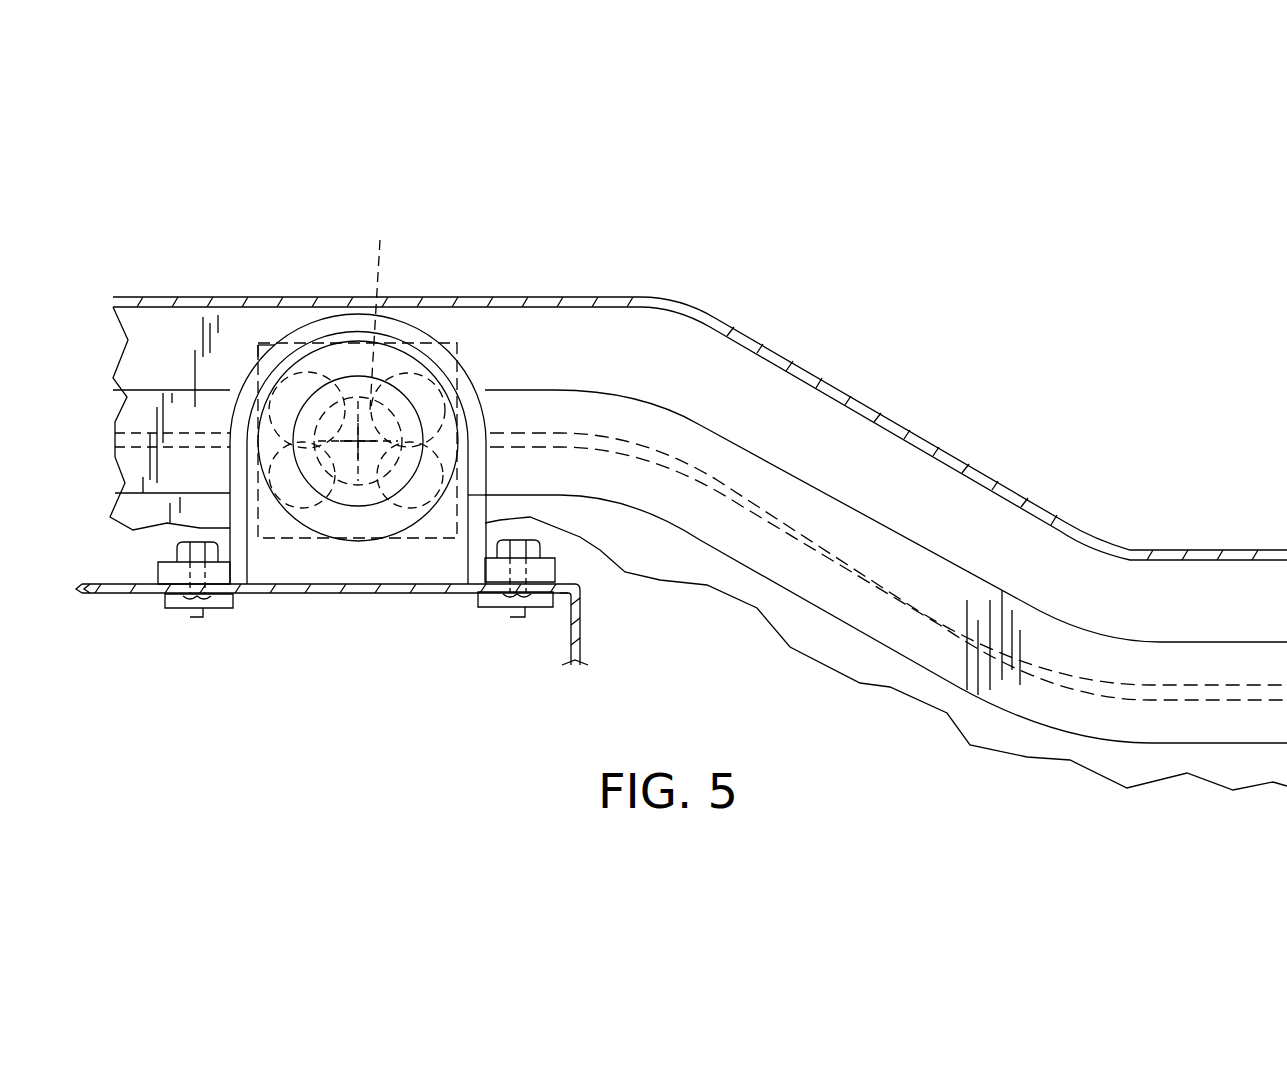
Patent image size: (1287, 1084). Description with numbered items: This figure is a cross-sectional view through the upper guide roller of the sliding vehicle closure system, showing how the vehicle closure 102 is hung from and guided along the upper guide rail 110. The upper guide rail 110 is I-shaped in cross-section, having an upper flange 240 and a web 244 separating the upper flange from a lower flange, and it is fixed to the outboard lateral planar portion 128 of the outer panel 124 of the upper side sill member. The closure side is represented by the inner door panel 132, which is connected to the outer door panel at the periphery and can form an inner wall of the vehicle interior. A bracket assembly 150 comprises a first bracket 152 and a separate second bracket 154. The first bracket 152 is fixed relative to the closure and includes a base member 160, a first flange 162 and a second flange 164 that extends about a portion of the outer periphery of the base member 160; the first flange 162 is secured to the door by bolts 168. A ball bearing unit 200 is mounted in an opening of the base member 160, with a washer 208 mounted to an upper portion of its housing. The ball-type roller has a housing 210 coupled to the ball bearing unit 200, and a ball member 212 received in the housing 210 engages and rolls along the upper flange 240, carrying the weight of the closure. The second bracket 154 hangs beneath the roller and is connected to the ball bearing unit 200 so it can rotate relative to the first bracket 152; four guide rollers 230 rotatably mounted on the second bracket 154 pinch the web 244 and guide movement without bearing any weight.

The vehicle closure 102 is at (263, 594).
The upper guide rail 110 is at (862, 514).
The outer panel 124 is at (935, 445).
The outboard lateral planar portion 128 is at (747, 582).
The inner door panel 132 is at (372, 596).
The bracket assembly 150 is at (425, 320).
The first bracket 152 is at (298, 327).
The second bracket 154 is at (258, 338).
The base member 160 is at (445, 540).
The first flange 162 is at (168, 568).
The second flange 164 is at (478, 405).
The bolts 168 is at (196, 620).
The ball bearing unit 200 is at (346, 536).
The washer 208 is at (440, 450).
The housing 210 is at (352, 378).
The ball member 212 is at (383, 308).
The guide rollers 230 is at (455, 352).
The upper flange 240 is at (913, 638).
The web 244 is at (860, 570).